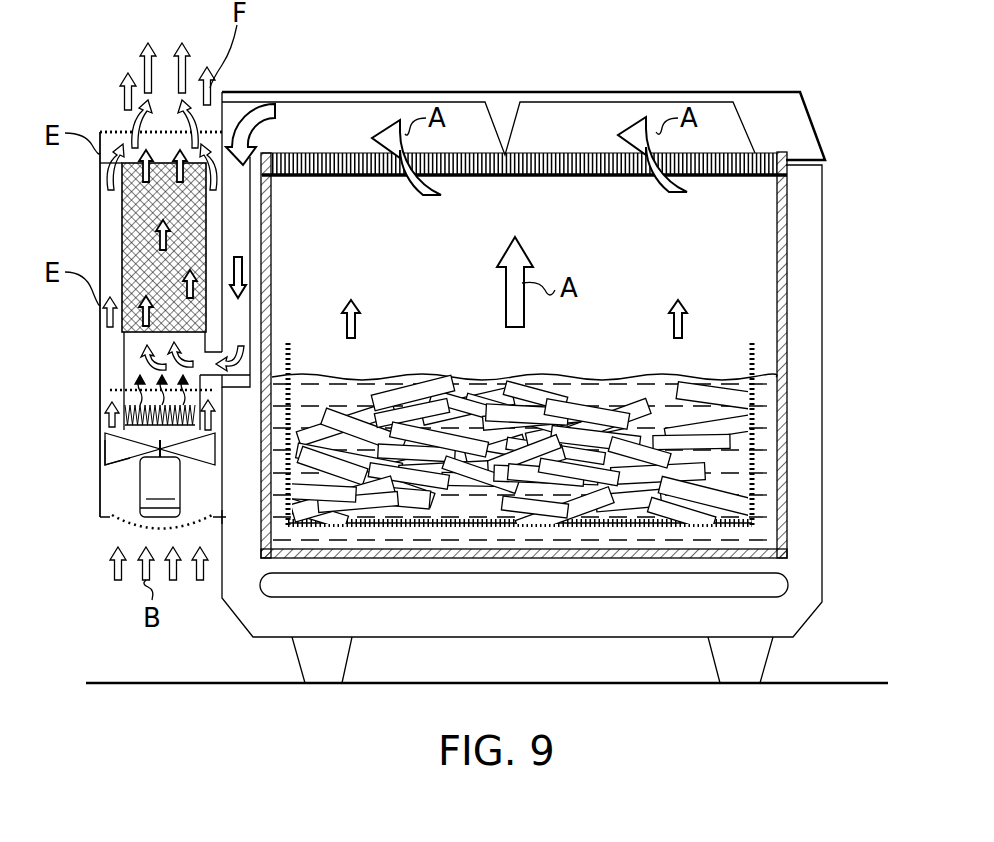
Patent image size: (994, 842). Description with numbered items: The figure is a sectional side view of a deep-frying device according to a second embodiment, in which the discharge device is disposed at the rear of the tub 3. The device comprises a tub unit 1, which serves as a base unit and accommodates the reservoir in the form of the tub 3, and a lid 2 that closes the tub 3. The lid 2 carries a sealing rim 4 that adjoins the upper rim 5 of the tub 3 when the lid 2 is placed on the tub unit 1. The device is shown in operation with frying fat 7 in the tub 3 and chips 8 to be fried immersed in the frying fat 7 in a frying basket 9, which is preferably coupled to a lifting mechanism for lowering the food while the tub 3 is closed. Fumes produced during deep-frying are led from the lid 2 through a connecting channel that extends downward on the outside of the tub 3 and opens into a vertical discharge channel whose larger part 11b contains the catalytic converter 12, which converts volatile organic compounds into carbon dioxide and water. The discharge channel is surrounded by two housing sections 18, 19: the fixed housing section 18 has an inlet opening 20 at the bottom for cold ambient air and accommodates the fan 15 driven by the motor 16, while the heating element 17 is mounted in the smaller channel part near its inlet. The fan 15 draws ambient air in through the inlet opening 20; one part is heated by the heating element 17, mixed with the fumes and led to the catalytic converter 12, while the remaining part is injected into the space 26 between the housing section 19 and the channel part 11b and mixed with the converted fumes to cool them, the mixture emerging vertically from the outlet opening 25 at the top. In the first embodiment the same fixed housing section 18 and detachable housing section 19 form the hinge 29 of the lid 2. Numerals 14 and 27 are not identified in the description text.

The tub unit 1 is at (835, 392).
The lid 2 is at (835, 128).
The tub 3 is at (787, 298).
The sealing rim 4 is at (583, 178).
The upper rim 5 is at (718, 177).
The frying fat 7 is at (603, 390).
The chips 8 is at (405, 395).
The frying basket 9 is at (752, 345).
The larger part of the discharge channel 11b is at (125, 360).
The catalytic converter 12 is at (123, 332).
The fan 14 is at (137, 430).
The fan 15 is at (115, 452).
The motor 16 is at (160, 487).
The heating element 17 is at (125, 413).
The housing section 18 is at (98, 497).
The housing section 19 is at (108, 182).
The inlet opening 20 is at (120, 520).
The outlet opening 25 is at (125, 127).
The space 26 is at (107, 253).
The filter unit 27 is at (90, 212).
The hinge 29 is at (560, 155).